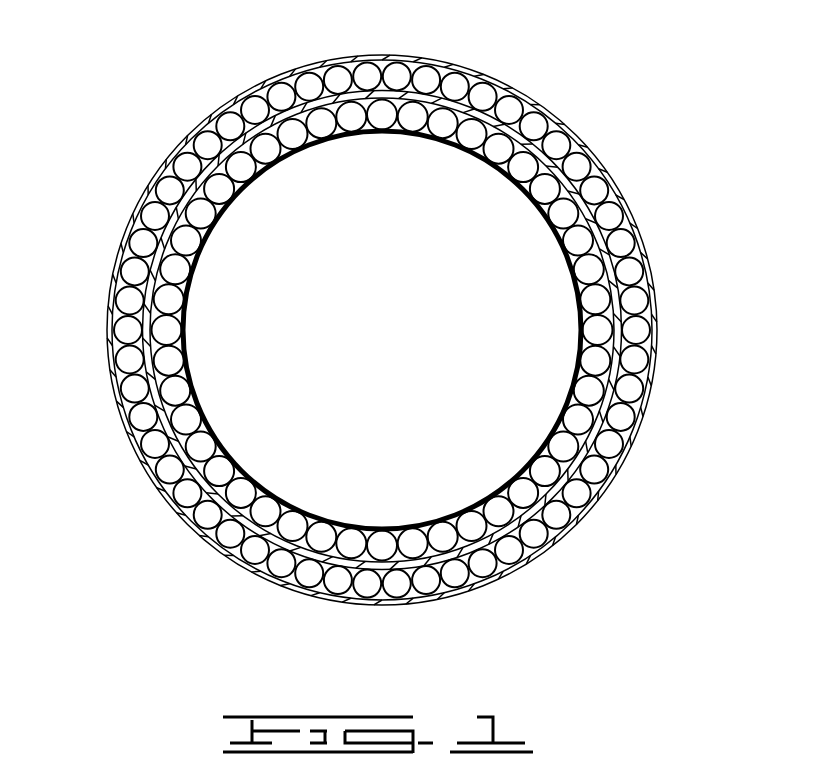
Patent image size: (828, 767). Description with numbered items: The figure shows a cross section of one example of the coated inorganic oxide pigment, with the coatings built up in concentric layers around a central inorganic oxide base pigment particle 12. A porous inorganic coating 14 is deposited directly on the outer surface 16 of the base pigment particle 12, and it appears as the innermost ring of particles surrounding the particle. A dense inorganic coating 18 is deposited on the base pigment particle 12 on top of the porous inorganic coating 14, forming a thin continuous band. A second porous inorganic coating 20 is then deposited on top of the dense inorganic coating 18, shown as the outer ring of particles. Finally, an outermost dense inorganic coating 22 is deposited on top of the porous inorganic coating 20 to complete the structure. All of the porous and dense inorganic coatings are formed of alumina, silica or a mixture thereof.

The inorganic oxide base pigment particle 12 is at (395, 327).
The porous inorganic coating 14 is at (443, 122).
The outer surface 16 is at (553, 253).
The dense inorganic coating 18 is at (572, 192).
The porous inorganic coating 20 is at (333, 82).
The dense inorganic coating 22 is at (573, 132).